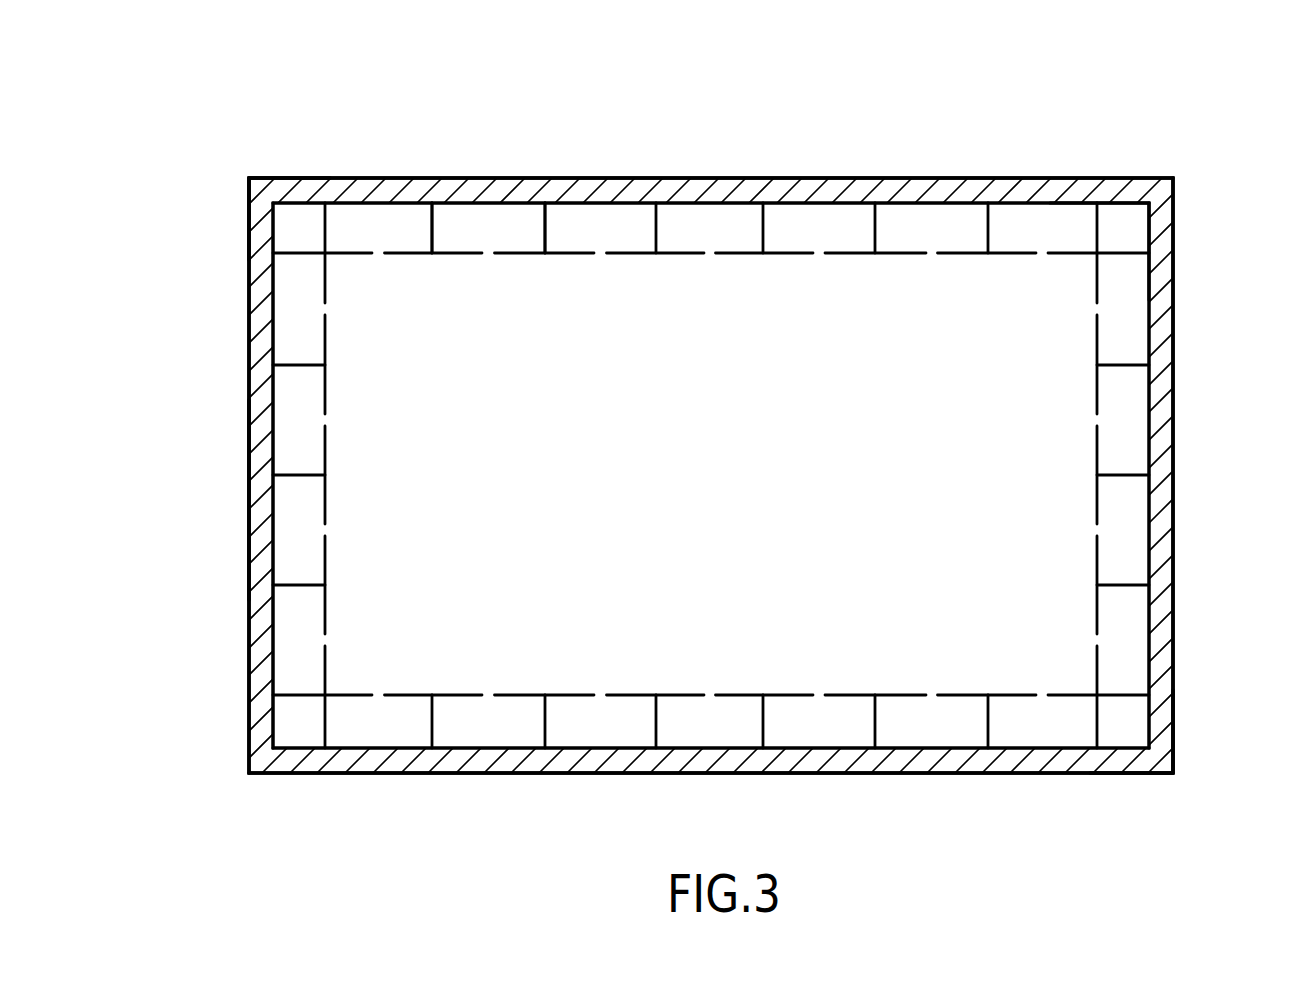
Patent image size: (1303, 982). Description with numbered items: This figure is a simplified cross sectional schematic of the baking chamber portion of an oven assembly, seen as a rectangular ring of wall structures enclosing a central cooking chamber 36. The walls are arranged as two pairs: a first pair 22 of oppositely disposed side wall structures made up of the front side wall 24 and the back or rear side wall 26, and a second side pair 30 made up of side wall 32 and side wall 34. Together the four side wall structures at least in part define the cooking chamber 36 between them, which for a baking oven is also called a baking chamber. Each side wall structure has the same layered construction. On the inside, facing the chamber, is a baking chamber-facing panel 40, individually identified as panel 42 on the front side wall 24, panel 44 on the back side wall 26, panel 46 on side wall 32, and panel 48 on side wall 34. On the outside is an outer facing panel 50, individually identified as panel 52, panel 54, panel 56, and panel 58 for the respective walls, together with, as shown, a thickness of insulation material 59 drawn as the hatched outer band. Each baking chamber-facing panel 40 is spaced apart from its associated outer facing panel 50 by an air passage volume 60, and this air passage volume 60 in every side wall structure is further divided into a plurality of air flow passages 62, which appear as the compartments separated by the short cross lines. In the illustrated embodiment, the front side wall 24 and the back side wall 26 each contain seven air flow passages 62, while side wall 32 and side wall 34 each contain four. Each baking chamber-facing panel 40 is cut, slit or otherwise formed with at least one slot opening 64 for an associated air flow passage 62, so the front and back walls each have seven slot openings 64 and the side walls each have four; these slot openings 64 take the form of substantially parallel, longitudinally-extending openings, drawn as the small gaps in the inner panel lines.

The first pair of oppositely disposed side wall structures 22 is at (338, 792).
The front side wall 24 is at (515, 775).
The back side wall 26 is at (591, 172).
The second side pair of oppositely disposed side wall structures 30 is at (217, 500).
The side wall 32 is at (245, 440).
The side wall 34 is at (1180, 397).
The cooking chamber 36 is at (688, 494).
The baking chamber-facing panel 40 is at (326, 275).
The baking chamber-facing panel 42 is at (628, 694).
The baking chamber-facing panel 44 is at (657, 256).
The baking chamber-facing panel 46 is at (326, 496).
The baking chamber-facing panel 48 is at (1095, 486).
The outer facing panel 50 is at (295, 178).
The outer facing panel 52 is at (747, 765).
The outer facing panel 54 is at (697, 188).
The outer facing panel 56 is at (242, 298).
The outer facing panel 58 is at (1160, 513).
The thickness of insulation material 59 is at (1063, 185).
The air passage volume 60 is at (463, 212).
The air flow passages 62 is at (1028, 217).
The slot opening 64 is at (600, 255).